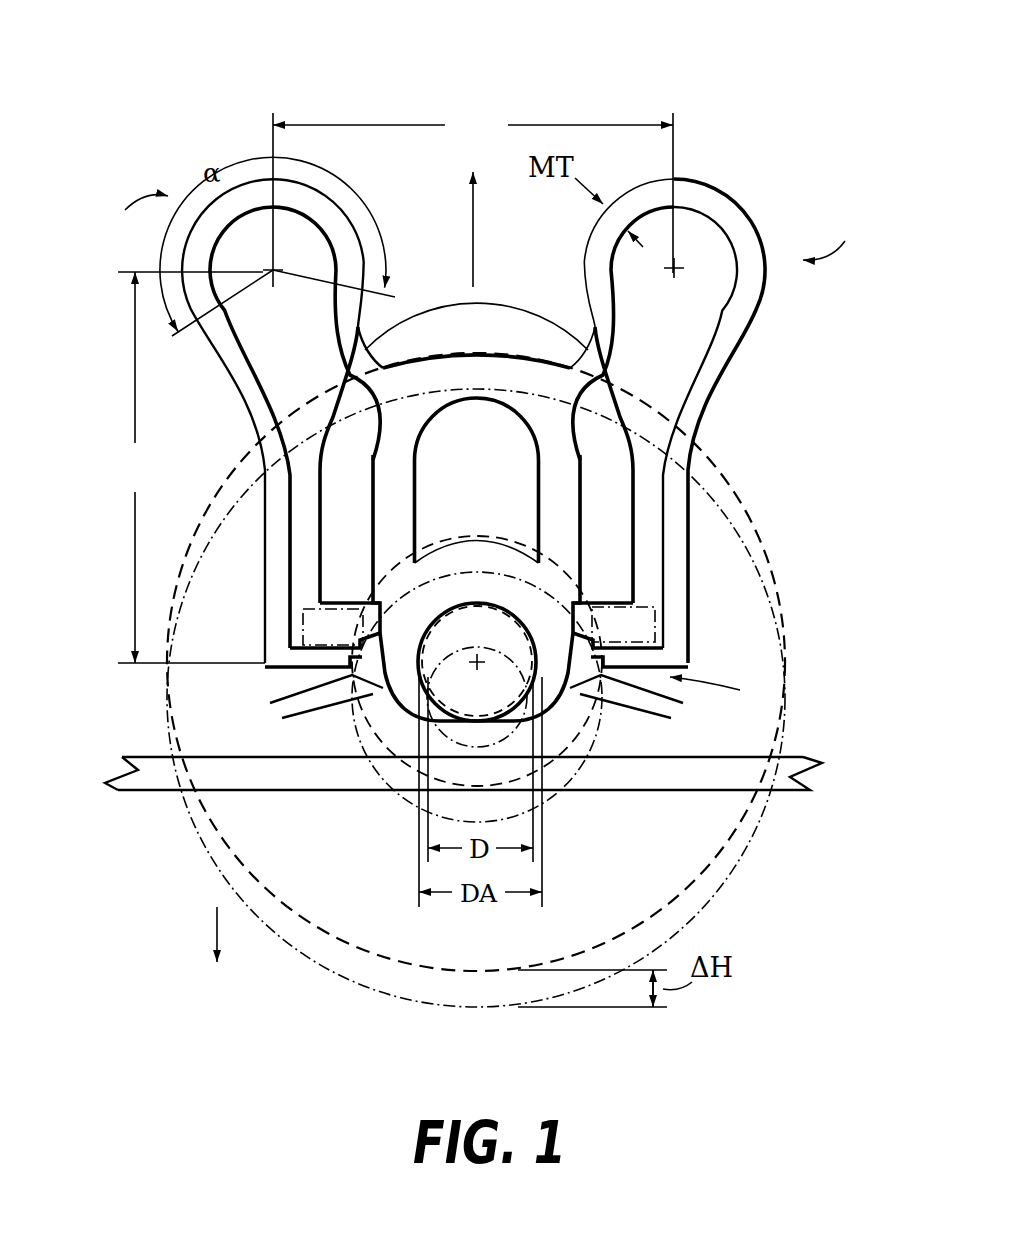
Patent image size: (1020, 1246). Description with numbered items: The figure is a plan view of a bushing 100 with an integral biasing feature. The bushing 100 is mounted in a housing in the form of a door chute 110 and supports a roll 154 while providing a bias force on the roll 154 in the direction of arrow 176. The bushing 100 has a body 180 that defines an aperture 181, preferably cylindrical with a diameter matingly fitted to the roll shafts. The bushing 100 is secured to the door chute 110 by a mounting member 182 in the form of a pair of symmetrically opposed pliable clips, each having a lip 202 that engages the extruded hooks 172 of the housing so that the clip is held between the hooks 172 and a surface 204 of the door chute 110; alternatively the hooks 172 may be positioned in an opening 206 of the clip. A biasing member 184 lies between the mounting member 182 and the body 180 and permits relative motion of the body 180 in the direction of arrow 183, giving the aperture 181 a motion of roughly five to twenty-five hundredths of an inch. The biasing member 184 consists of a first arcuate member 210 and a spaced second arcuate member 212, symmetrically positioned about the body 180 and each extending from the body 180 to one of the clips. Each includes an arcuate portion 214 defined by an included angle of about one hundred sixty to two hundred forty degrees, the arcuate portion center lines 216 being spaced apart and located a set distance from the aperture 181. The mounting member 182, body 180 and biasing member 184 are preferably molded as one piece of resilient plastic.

The bushing 100 is at (787, 66).
The door chute 110 is at (655, 775).
The roll 154 is at (766, 482).
The hooks 172 is at (303, 612).
The arrow 176 is at (217, 910).
The body 180 is at (474, 370).
The aperture 181 is at (411, 681).
The mounting member 182 is at (290, 716).
The arrow 183 is at (463, 211).
The biasing member 184 is at (752, 405).
The lip 202 is at (370, 645).
The surface 204 is at (149, 757).
The opening 206 is at (721, 690).
The first arcuate member 210 is at (724, 187).
The second arcuate member 212 is at (234, 360).
The arcuate portion 214 is at (485, 228).
The arcuate portion center lines 216 is at (277, 279).